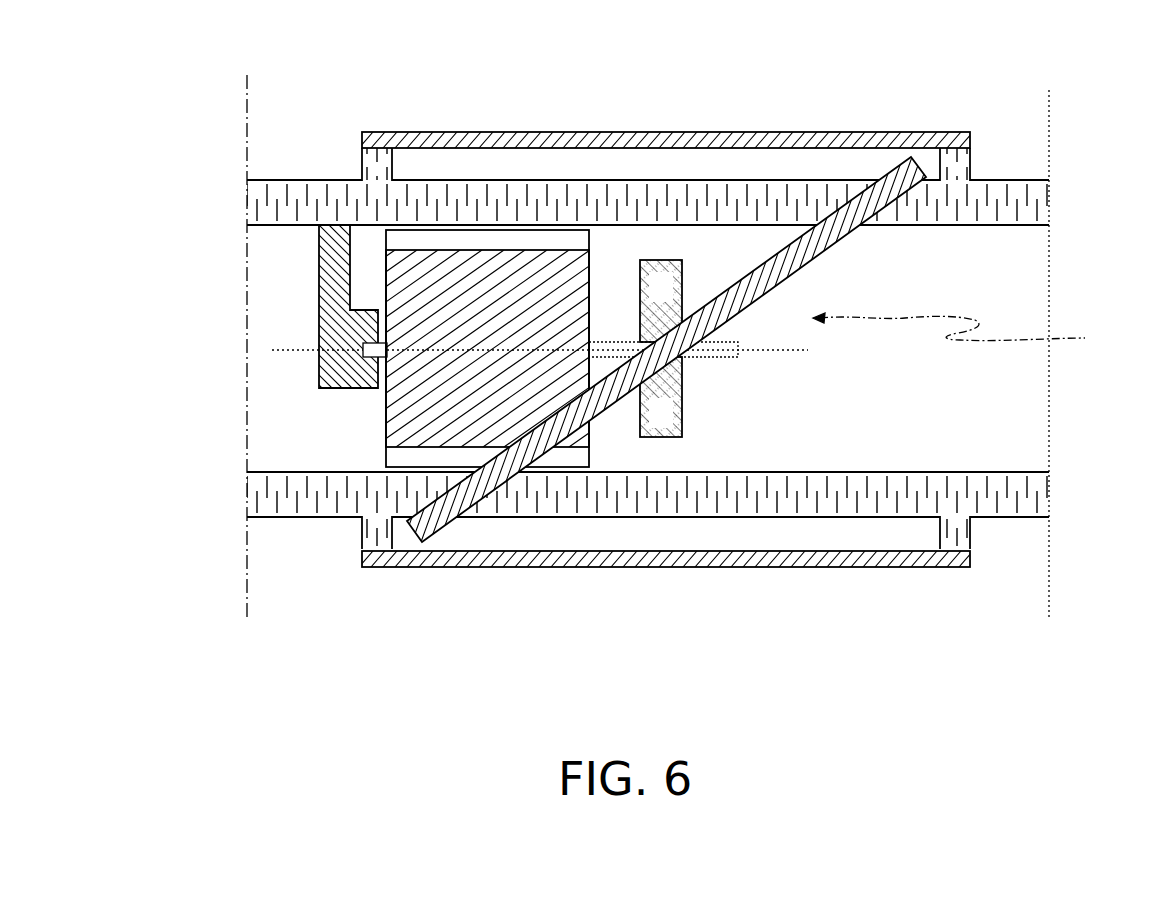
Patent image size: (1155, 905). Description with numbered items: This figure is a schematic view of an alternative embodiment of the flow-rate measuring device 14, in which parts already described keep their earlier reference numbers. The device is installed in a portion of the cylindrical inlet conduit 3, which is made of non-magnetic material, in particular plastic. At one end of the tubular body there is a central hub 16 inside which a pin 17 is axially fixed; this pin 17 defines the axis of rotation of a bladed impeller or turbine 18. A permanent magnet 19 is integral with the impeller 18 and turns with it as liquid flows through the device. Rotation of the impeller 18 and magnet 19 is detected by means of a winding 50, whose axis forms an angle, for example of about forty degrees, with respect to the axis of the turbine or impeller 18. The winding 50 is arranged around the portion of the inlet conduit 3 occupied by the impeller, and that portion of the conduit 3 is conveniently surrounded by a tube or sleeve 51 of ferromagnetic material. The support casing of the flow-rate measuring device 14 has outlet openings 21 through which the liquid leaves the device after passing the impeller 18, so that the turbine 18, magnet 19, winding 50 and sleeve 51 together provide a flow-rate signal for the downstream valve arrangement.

The inlet conduit 3 is at (310, 180).
The flow-rate measuring device 14 is at (969, 333).
The central hub 16 is at (343, 372).
The pin 17 is at (370, 335).
The bladed impeller 18 is at (599, 259).
The permanent magnet 19 is at (686, 401).
The outlet openings 21 is at (290, 447).
The winding 50 is at (712, 300).
The tube or sleeve 51 is at (500, 132).